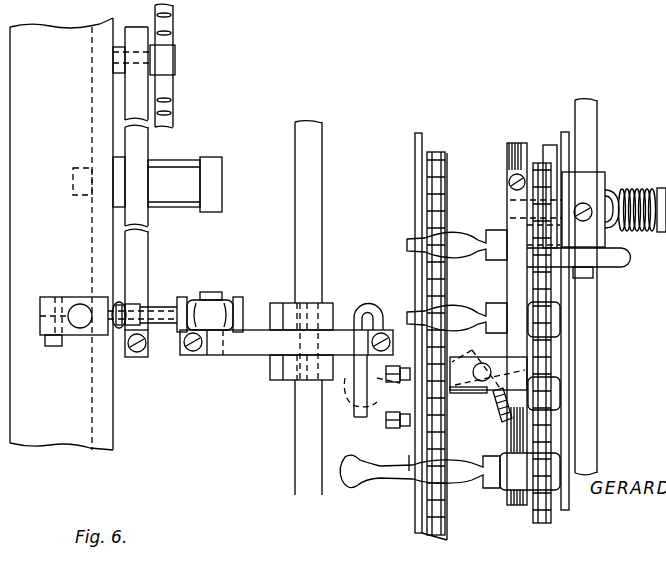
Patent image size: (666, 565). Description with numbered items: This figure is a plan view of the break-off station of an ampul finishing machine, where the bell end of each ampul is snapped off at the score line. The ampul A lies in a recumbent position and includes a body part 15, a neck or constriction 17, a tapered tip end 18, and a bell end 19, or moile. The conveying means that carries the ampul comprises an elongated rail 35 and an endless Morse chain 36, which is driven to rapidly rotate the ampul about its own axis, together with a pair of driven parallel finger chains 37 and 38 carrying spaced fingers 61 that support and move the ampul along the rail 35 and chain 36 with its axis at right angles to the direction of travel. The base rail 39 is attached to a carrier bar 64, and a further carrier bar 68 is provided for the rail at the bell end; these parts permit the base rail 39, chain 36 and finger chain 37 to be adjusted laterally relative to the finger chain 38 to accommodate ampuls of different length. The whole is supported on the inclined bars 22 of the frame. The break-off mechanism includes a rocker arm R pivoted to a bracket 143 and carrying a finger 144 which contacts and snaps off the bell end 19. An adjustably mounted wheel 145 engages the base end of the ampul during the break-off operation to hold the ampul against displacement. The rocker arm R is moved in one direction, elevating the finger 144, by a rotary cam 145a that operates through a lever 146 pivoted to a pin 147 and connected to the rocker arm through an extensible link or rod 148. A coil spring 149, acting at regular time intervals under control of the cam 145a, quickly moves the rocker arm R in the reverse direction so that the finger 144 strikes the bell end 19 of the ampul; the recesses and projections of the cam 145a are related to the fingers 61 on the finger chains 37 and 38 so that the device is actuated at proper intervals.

The rotary cam 145a is at (167, 25).
The lever 146 is at (140, 147).
The pin 147 is at (178, 193).
The coil spring 149 is at (121, 303).
The extensible link or rod 148 is at (215, 313).
The carrier bar 68 is at (315, 243).
The bracket 143 is at (290, 372).
The finger 144 is at (362, 408).
The rocker arm R is at (250, 355).
The inclined bars 22 is at (56, 440).
The endless chain 36 is at (518, 143).
The finger chain 38 is at (438, 177).
The finger chain 37 is at (540, 184).
The carrier bar 64 is at (590, 364).
The base rail 39 is at (567, 422).
The adjustably mounted wheel 145 is at (496, 412).
The neck or constriction 17 is at (489, 443).
The body part 15 is at (545, 478).
The tapered tip end 18 is at (401, 456).
The bell end or moile 19 is at (348, 485).
The rail 35 is at (416, 497).
The fingers 61 is at (443, 489).
The ampul A is at (488, 493).